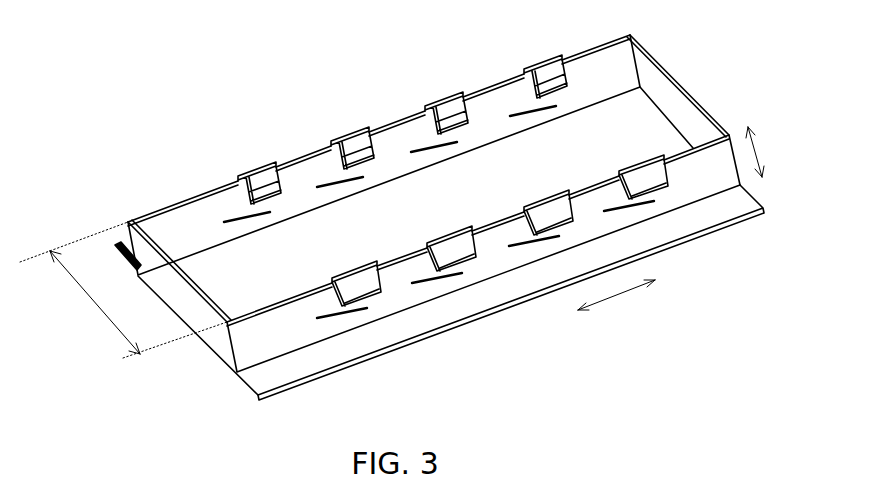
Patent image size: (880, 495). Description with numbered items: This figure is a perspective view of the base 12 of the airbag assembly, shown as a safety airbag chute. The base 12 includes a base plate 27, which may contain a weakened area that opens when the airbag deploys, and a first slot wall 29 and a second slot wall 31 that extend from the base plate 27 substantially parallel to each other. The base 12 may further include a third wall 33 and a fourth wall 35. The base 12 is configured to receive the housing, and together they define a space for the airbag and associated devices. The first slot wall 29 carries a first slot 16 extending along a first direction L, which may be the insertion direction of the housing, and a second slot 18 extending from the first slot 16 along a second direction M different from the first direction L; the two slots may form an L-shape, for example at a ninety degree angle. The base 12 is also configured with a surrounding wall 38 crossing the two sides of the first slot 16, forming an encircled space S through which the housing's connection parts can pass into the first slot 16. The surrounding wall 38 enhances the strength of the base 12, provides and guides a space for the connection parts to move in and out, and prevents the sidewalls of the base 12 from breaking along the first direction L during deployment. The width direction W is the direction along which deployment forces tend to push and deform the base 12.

The base 12 is at (439, 221).
The first slot 16 is at (467, 105).
The second slot 18 is at (427, 140).
The base plate 27 is at (290, 372).
The first slot wall 29 is at (247, 352).
The second slot wall 31 is at (182, 218).
The third wall 33 is at (202, 272).
The fourth wall 35 is at (668, 102).
The surrounding wall 38 is at (248, 168).
The encircled space S is at (350, 272).
The width direction W is at (123, 290).
The first direction L is at (759, 152).
The second direction M is at (616, 302).